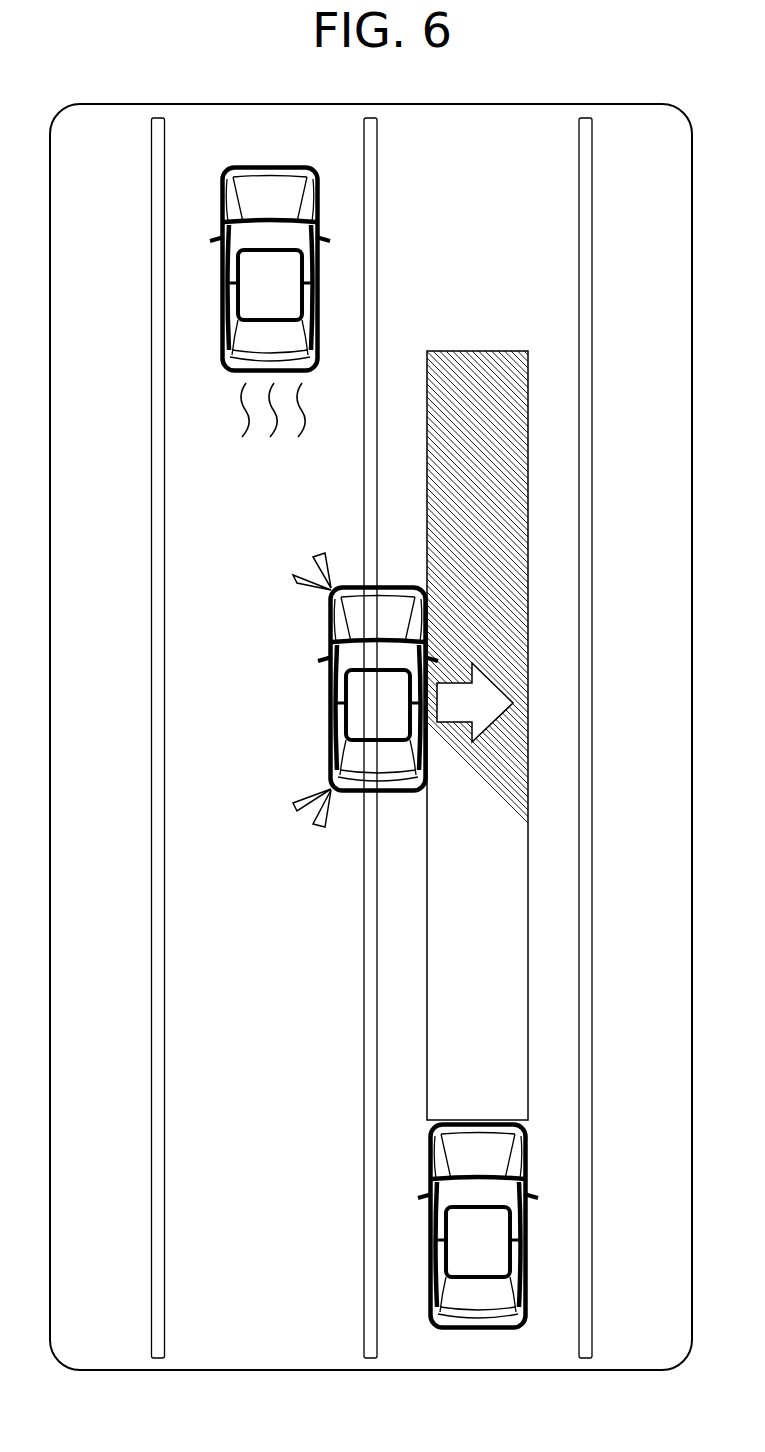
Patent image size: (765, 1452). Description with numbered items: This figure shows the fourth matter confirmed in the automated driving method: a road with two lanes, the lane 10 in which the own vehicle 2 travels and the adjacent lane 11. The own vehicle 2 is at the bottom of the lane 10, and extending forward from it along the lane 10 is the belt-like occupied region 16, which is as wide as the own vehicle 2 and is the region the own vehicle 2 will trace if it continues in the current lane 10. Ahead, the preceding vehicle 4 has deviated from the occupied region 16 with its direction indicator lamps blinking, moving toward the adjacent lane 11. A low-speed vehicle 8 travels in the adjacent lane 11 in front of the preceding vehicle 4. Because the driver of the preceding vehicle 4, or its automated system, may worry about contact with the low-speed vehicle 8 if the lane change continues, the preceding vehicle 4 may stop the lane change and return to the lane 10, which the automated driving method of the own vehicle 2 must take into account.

The own vehicle 2 is at (528, 1233).
The preceding vehicle 4 is at (328, 700).
The low-speed vehicle 8 is at (222, 283).
The lane 10 is at (478, 152).
The lane 11 is at (266, 150).
The occupied region 16 is at (528, 820).